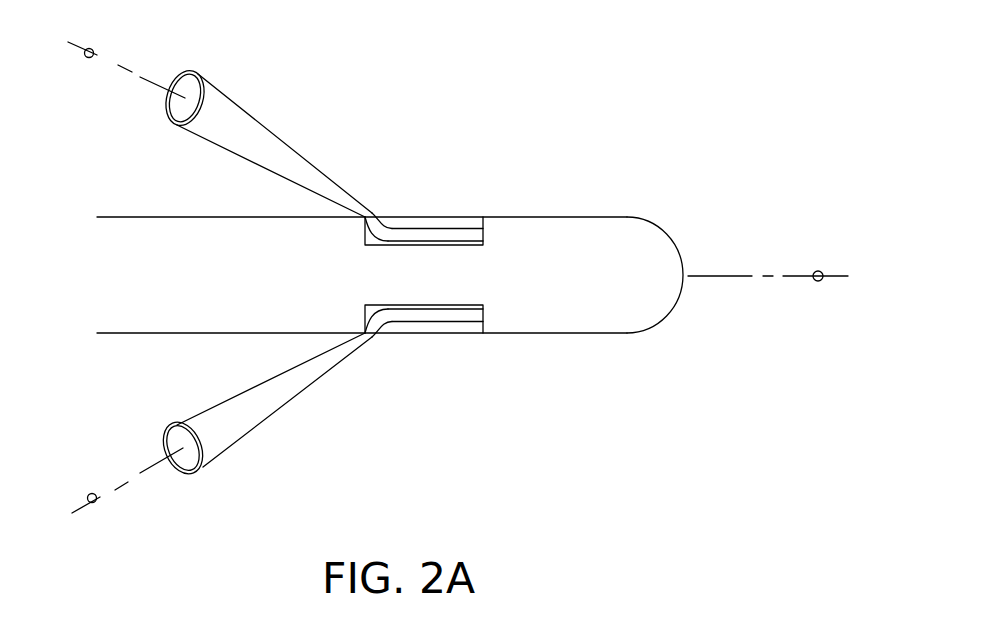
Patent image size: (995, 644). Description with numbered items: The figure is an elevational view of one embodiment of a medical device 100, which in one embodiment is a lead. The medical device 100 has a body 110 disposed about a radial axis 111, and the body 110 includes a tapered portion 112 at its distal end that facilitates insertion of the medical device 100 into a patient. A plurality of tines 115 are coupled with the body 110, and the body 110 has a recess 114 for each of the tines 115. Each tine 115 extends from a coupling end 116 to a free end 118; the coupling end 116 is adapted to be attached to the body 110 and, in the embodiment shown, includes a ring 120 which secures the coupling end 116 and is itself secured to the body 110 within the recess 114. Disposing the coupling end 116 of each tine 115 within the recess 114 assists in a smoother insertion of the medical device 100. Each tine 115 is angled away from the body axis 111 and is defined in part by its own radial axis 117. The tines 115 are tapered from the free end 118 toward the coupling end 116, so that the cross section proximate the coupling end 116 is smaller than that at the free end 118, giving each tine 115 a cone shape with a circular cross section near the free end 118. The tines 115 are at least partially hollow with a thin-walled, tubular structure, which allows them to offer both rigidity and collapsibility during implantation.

The medical device 100 is at (645, 88).
The body 110 is at (580, 217).
The radial axis 111 is at (821, 281).
The tapered portion 112 is at (667, 240).
The recess 114 is at (437, 217).
The tine 115 is at (267, 127).
The coupling end 116 is at (383, 222).
The radial axis of tine 117 is at (93, 51).
The free end 118 is at (203, 78).
The ring 120 is at (458, 232).